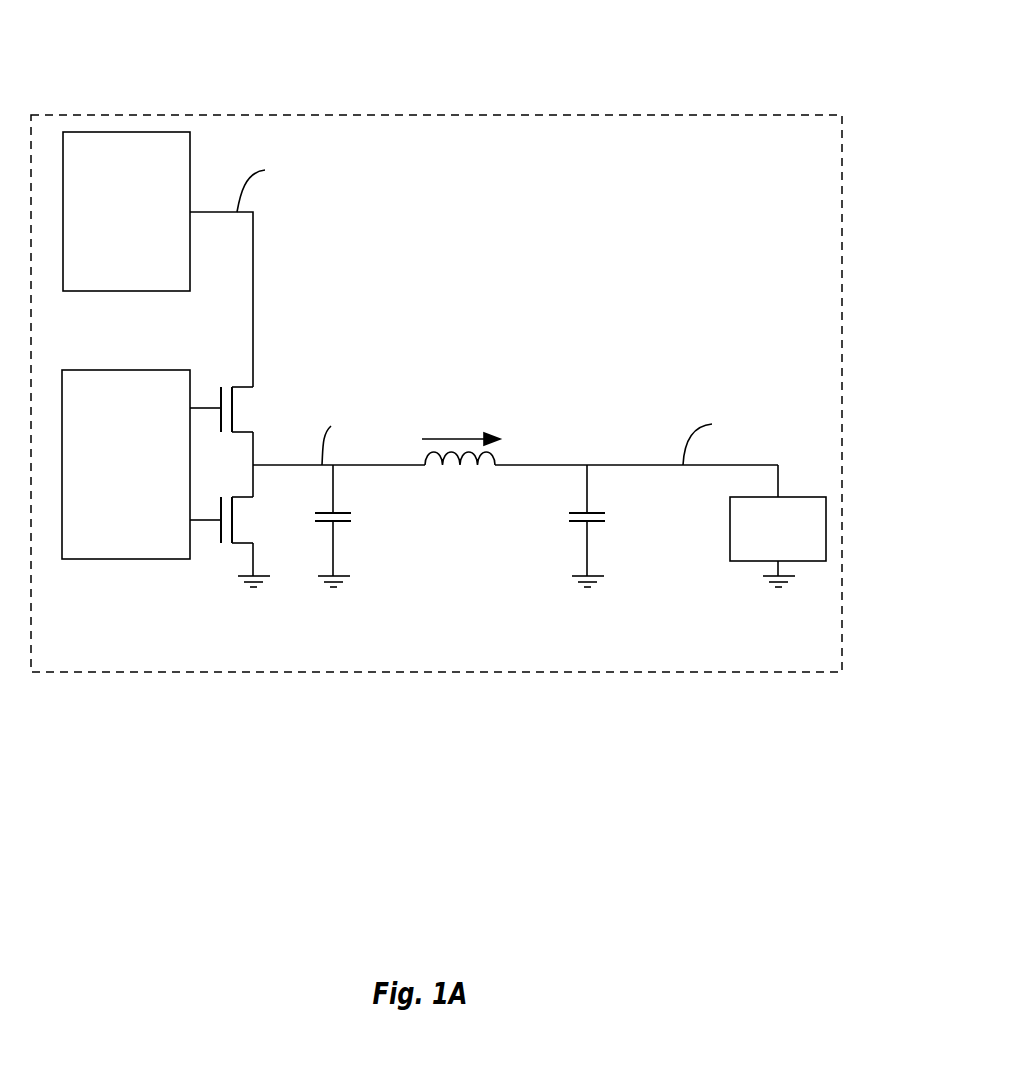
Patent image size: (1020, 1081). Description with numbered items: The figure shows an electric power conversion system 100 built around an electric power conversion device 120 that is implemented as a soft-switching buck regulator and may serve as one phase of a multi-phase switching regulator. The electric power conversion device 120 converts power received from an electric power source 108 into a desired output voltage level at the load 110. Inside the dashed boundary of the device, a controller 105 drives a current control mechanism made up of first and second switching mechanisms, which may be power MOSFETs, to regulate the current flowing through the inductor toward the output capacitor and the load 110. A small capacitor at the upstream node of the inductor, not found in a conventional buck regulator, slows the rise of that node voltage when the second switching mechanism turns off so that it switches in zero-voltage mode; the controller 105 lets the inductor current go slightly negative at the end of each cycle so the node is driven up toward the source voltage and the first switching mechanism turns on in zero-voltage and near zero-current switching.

The electric power conversion system 100 is at (436, 340).
The controller 105 is at (108, 491).
The electric power source 108 is at (108, 262).
The load 110 is at (760, 554).
The electric power conversion device 120 is at (569, 272).